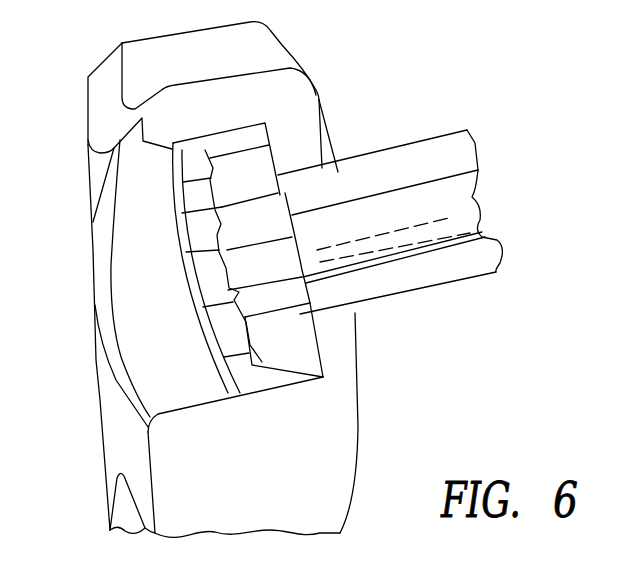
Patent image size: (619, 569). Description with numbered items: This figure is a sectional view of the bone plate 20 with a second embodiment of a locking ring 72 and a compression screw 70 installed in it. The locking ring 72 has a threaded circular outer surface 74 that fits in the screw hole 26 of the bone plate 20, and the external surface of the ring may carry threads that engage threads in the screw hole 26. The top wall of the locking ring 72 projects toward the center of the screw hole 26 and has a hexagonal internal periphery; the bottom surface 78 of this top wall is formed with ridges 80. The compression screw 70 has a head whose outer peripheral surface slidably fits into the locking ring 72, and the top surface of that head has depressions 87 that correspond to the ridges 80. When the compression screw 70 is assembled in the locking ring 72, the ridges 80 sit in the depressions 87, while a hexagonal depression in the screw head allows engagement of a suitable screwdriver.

The bone plate 20 is at (293, 110).
The screw hole 26 is at (155, 374).
The compression screw 70 is at (437, 157).
The locking ring 72 is at (178, 160).
The threaded circular outer surface 74 is at (240, 140).
The bottom surface 78 is at (248, 331).
The ridges 80 is at (222, 305).
The depressions 87 is at (215, 220).